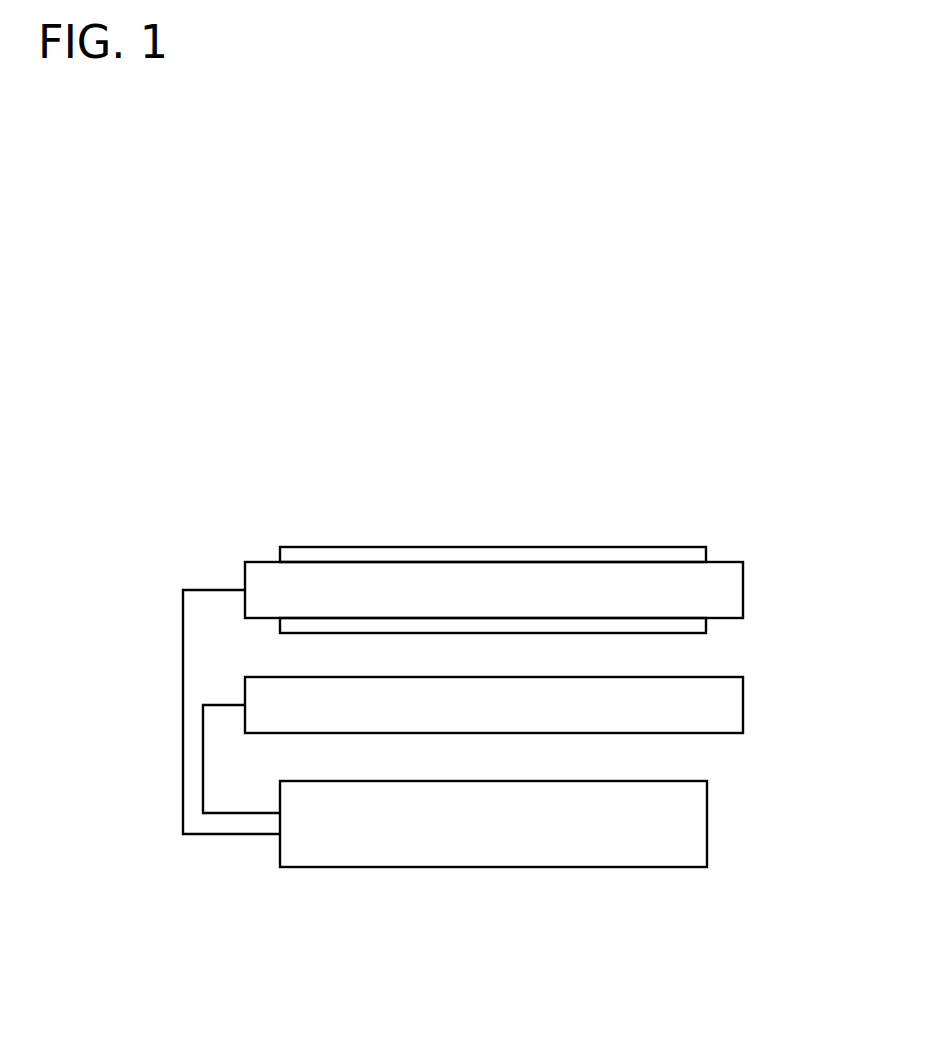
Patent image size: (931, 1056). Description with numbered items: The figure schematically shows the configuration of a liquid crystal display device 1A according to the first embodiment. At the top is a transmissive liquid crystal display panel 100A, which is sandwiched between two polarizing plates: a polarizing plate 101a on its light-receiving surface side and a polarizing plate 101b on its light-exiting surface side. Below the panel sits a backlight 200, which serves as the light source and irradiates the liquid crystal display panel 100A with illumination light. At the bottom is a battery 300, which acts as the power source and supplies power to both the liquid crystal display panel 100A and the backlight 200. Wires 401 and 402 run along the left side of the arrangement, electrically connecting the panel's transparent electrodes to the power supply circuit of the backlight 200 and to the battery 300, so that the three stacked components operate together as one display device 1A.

The liquid crystal display device 1A is at (268, 488).
The polarizing plate 101b is at (706, 552).
The transmissive liquid crystal display panel 100A is at (737, 590).
The polarizing plate 101a is at (706, 628).
The backlight 200 is at (737, 708).
The battery 300 is at (697, 821).
The wire 401 is at (183, 681).
The wire 402 is at (203, 763).